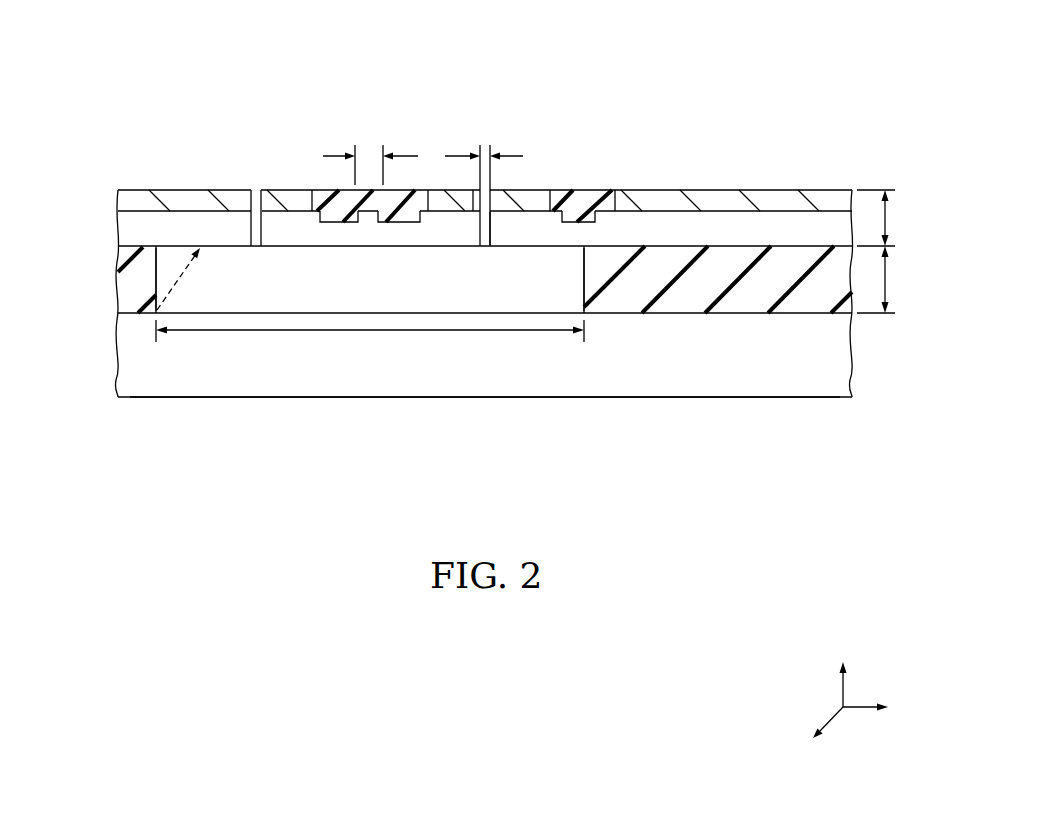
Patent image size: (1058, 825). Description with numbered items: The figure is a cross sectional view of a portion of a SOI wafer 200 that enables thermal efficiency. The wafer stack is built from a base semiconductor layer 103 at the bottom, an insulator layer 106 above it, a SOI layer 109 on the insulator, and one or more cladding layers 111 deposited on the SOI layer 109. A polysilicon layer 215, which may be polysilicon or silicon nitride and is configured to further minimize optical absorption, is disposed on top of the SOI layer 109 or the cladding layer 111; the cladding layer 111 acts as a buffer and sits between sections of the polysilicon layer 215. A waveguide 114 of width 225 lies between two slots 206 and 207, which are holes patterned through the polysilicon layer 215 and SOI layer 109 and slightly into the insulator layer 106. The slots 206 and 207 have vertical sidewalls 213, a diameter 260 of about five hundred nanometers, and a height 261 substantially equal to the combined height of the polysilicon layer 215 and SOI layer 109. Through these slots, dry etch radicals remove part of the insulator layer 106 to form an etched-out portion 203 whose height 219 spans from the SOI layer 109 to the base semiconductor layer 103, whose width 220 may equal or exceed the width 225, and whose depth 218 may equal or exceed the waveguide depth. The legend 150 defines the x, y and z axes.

The SOI wafer 200 is at (163, 103).
The polysilicon layer 215 is at (178, 200).
The slot 206 is at (257, 182).
The width of the waveguide 225 is at (330, 156).
The waveguide 114 is at (363, 207).
The diameter of the slots 260 is at (452, 157).
The slot 207 is at (485, 139).
The vertical sidewalls 213 is at (493, 228).
The cladding layer 111 is at (585, 198).
The SOI layer 109 is at (775, 227).
The height of the slots 261 is at (888, 218).
The insulator layer 106 is at (117, 288).
The base semiconductor layer 103 is at (112, 350).
The depth of the etched-out portion 218 is at (180, 285).
The width of the etched-out portion 220 is at (370, 332).
The etched-out portion 203 is at (500, 296).
The height of the etched-out portion 219 is at (888, 281).
The legend 150 is at (856, 609).